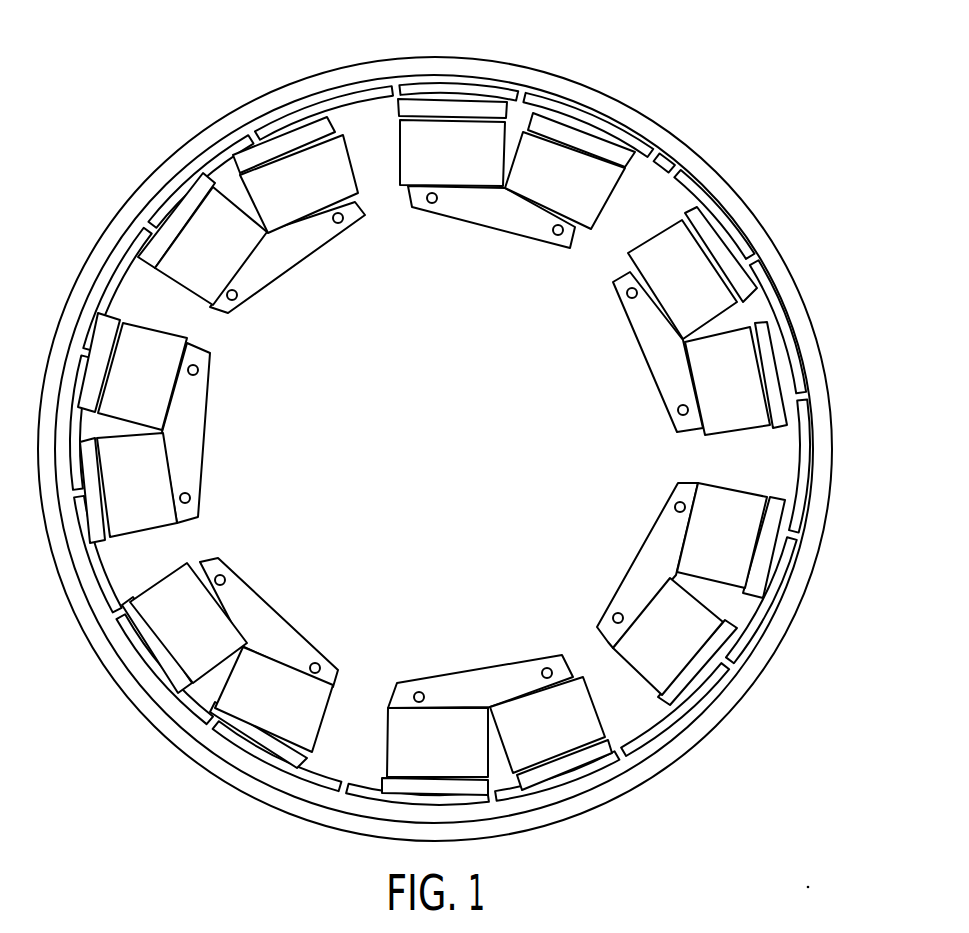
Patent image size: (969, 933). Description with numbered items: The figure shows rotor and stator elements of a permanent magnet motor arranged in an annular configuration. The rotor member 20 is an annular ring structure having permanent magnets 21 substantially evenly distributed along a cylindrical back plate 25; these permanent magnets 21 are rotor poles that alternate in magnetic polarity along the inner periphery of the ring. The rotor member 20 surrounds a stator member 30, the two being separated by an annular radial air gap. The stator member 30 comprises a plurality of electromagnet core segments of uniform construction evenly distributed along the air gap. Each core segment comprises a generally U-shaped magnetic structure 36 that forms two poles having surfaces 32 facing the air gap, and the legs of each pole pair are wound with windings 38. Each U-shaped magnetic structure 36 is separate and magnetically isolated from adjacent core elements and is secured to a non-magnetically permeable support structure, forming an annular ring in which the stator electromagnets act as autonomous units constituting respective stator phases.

The rotor member 20 is at (822, 300).
The permanent magnets 21 is at (673, 175).
The cylindrical back plate 25 is at (621, 103).
The stator member 30 is at (262, 399).
The pole surfaces 32 is at (433, 107).
The U-shaped magnetic structure 36 is at (450, 190).
The windings 38 is at (468, 130).